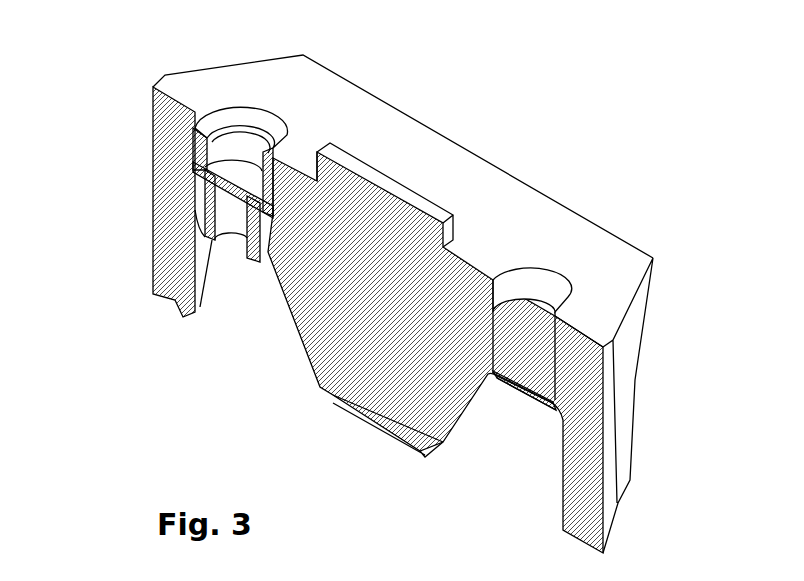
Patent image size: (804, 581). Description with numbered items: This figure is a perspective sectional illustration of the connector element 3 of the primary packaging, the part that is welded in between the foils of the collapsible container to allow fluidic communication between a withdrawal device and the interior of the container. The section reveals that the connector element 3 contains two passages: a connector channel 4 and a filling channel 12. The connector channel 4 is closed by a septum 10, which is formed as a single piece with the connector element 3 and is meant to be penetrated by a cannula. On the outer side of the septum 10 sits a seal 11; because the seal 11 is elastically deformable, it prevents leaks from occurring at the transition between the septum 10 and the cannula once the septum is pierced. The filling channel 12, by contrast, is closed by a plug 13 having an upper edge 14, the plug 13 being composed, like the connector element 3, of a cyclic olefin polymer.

The connector element 3 is at (386, 293).
The connector channel 4 is at (513, 447).
The septum 10 is at (547, 402).
The seal 11 is at (527, 363).
The filling channel 12 is at (250, 296).
The plug 13 is at (198, 153).
The upper edge 14 is at (210, 134).